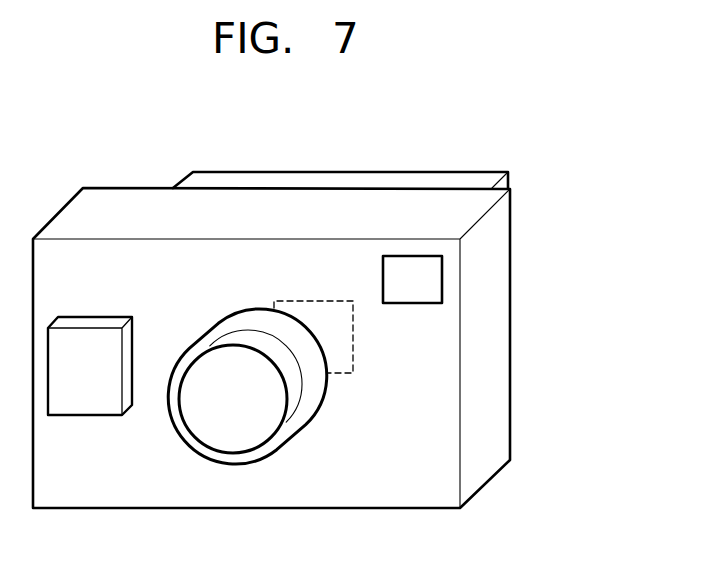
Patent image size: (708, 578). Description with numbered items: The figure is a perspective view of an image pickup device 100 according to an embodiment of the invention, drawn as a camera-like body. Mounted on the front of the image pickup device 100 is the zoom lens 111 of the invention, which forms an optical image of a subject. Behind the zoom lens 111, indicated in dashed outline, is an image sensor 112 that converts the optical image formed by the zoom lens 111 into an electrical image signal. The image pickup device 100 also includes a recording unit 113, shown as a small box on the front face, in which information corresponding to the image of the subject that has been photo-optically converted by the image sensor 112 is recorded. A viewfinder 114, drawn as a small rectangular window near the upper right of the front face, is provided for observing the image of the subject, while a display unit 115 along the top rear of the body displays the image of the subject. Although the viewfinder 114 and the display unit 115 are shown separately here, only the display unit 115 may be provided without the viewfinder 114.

The image pickup device 100 is at (419, 494).
The zoom lens 111 is at (232, 442).
The image sensor 112 is at (342, 373).
The recording unit 113 is at (93, 410).
The viewfinder 114 is at (438, 281).
The display unit 115 is at (399, 172).